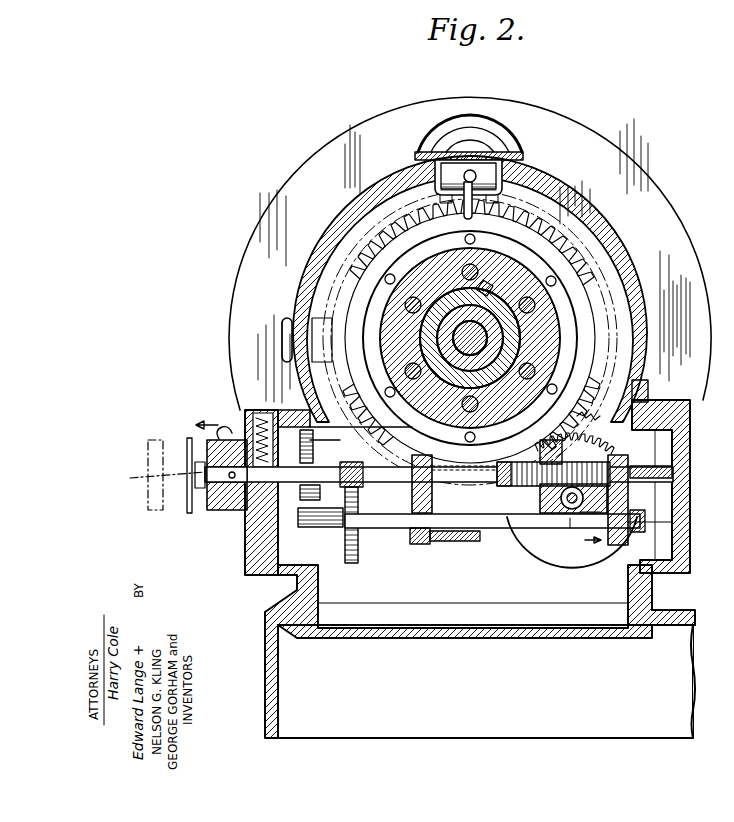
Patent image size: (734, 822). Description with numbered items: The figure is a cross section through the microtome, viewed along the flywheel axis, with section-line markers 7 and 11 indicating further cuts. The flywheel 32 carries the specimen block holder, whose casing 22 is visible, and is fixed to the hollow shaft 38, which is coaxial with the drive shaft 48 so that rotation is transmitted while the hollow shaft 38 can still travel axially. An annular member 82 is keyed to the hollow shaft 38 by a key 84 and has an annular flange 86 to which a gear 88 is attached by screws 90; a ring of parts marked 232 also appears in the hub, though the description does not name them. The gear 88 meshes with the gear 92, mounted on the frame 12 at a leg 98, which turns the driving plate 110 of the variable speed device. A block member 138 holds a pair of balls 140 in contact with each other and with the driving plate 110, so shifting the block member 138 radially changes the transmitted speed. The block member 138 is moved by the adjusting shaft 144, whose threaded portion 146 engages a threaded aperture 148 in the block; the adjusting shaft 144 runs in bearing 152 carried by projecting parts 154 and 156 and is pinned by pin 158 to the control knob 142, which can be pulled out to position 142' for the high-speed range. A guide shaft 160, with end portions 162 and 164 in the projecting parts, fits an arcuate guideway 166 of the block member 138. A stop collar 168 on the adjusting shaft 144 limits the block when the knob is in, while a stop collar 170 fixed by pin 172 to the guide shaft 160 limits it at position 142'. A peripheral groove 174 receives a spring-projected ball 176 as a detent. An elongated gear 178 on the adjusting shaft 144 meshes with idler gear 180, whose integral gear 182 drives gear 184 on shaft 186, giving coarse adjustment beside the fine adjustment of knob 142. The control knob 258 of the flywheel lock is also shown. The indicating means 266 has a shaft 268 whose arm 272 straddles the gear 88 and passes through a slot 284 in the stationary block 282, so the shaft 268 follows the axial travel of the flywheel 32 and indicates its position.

The section line 7- 7 is at (258, 312).
The section line 11- 11 is at (440, 72).
The frame 12 is at (298, 272).
The casing 22 is at (443, 135).
The flywheel 32 is at (302, 165).
The hollow shaft 38 is at (440, 292).
The drive shaft 48 is at (453, 334).
The annular member 82 is at (440, 272).
The key 84 is at (504, 270).
The annular flange 86 is at (577, 287).
The gear 88 is at (580, 204).
The screws 90 is at (551, 266).
The gear 92 is at (570, 437).
The leg 98 is at (655, 532).
The driving plate 110 is at (538, 556).
The block member 138 is at (546, 508).
The balls 140 is at (565, 509).
The control knob 142 is at (206, 489).
The out position of control knob 142' is at (145, 475).
The adjusting shaft 144 is at (400, 486).
The threaded portion 146 is at (612, 456).
The threaded aperture 148 is at (565, 452).
The bearing 152 is at (672, 466).
The projecting part 154 is at (426, 472).
The projecting part 156 is at (652, 498).
The pin 158 is at (206, 445).
The guide shaft 160 is at (498, 528).
The end portion 162 is at (405, 535).
The end portion 164 is at (640, 524).
The arcuate longitudinal guideway 166 is at (577, 525).
The stop collar 168 is at (497, 486).
The stop collar 170 is at (455, 540).
The pin 172 is at (430, 541).
The peripheral groove 174 is at (262, 514).
The spring projected ball 176 is at (281, 446).
The elongated gear 178 is at (362, 466).
The idler gear 180 is at (359, 565).
The gear 182 is at (322, 530).
The gear 184 is at (313, 444).
The shaft 186 is at (300, 490).
The bolts 232 is at (415, 368).
The control knob 258 is at (288, 318).
The indicating means 266 is at (478, 150).
The shaft 268 is at (446, 172).
The projecting arm 272 is at (503, 208).
The stationary block 282 is at (514, 156).
The slot 284 is at (490, 172).